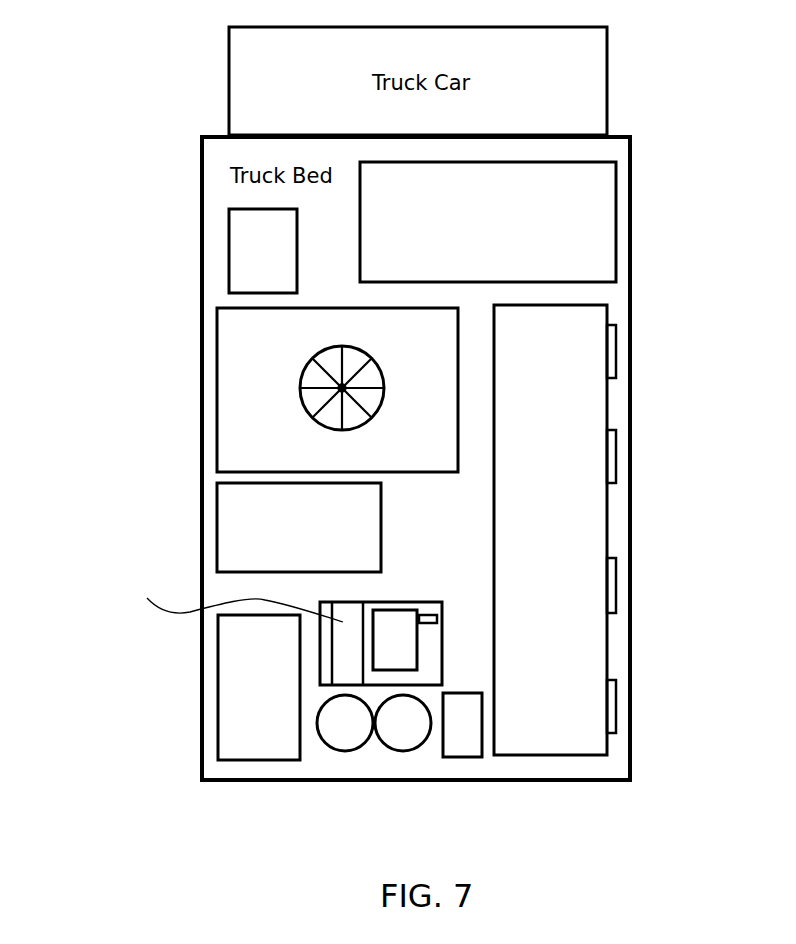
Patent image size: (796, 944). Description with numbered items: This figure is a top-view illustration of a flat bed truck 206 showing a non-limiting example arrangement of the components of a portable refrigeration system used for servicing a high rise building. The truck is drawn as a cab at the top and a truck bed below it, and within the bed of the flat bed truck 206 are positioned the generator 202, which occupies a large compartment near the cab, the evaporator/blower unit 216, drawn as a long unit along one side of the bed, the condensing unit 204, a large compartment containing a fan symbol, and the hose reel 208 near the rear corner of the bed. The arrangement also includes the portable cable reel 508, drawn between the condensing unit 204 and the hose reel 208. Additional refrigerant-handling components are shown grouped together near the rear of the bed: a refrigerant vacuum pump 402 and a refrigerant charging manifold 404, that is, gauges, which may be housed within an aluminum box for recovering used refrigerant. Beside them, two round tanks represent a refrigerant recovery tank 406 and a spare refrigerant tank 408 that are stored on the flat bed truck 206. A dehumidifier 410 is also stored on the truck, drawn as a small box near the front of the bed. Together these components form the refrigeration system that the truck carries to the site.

The generator 202 is at (616, 230).
The condensing unit 204 is at (218, 383).
The flat bed truck 206 is at (202, 152).
The hose reel 208 is at (218, 683).
The evaporator/blower unit 216 is at (607, 403).
The refrigerant vacuum pump 402 is at (388, 628).
The refrigerant charging manifold 404 is at (430, 612).
The refrigerant recovery tank 406 is at (345, 738).
The spare refrigerant tank 408 is at (403, 738).
The dehumidifier 410 is at (297, 241).
The portable cable reel 508 is at (218, 525).